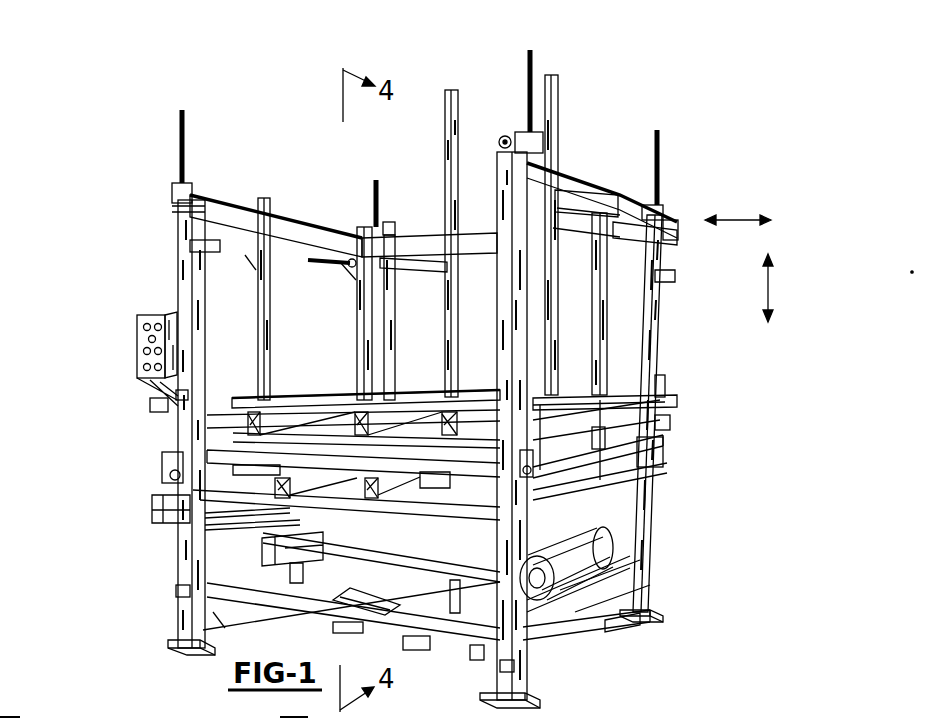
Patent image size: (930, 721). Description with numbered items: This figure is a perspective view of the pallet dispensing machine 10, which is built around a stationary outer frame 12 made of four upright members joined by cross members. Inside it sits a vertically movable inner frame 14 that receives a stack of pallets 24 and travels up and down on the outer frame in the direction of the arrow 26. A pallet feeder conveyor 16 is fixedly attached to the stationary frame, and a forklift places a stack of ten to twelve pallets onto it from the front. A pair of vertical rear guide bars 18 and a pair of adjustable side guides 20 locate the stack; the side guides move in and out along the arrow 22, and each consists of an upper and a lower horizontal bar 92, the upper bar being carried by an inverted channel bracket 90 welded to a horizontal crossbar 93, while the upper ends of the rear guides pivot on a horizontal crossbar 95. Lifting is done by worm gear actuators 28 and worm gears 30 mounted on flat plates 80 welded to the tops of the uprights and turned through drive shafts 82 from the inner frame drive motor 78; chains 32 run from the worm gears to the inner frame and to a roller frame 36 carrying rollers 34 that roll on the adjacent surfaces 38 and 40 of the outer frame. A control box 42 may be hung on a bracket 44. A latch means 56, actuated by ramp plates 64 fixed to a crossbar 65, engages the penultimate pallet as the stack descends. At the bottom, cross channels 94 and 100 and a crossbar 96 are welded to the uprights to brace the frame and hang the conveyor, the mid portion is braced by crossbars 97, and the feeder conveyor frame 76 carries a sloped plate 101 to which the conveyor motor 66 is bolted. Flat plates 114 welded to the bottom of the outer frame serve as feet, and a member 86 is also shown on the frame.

The pallet dispensing machine 10 is at (112, 125).
The stationary outer frame 12 is at (178, 290).
The vertically movable inner frame 14 is at (665, 458).
The pallet feeder conveyor 16 is at (650, 545).
The vertical rear guide bars 18 is at (448, 88).
The adjustable side guides 20 is at (265, 198).
The arrow 22 is at (740, 218).
The stack of pallets 24 is at (340, 395).
The arrow 26 is at (775, 297).
The worm gear actuators 28 is at (172, 192).
The worm gears 30 is at (181, 110).
The chains 32 is at (560, 160).
The rollers 34 is at (162, 470).
The roller frame 36 is at (165, 445).
The adjacent surface 38 is at (180, 397).
The adjacent surface 40 is at (520, 385).
The control box 42 is at (137, 350).
The bracket 44 is at (150, 382).
The latch means 56 is at (155, 497).
The ramp plates 64 is at (250, 528).
The crossbar 65 is at (235, 520).
The feeder conveyor motor 66 is at (350, 632).
The feeder conveyor frame 76 is at (290, 572).
The movable inner frame drive motor 78 is at (640, 702).
The flat plates 80 is at (172, 208).
The drive shafts 82 is at (330, 215).
The side beam 86 is at (665, 405).
The inverted channel bracket 90 is at (250, 265).
The horizontal bar 92 is at (190, 246).
The horizontal crossbars 93 is at (283, 248).
The cross channel 94 is at (595, 625).
The horizontal crossbar 95 is at (418, 255).
The crossbar 96 is at (478, 660).
The crossbars 97 is at (205, 420).
The cross channel 100 is at (215, 612).
The sloped plate 101 is at (427, 652).
The flat plates 114 is at (170, 648).